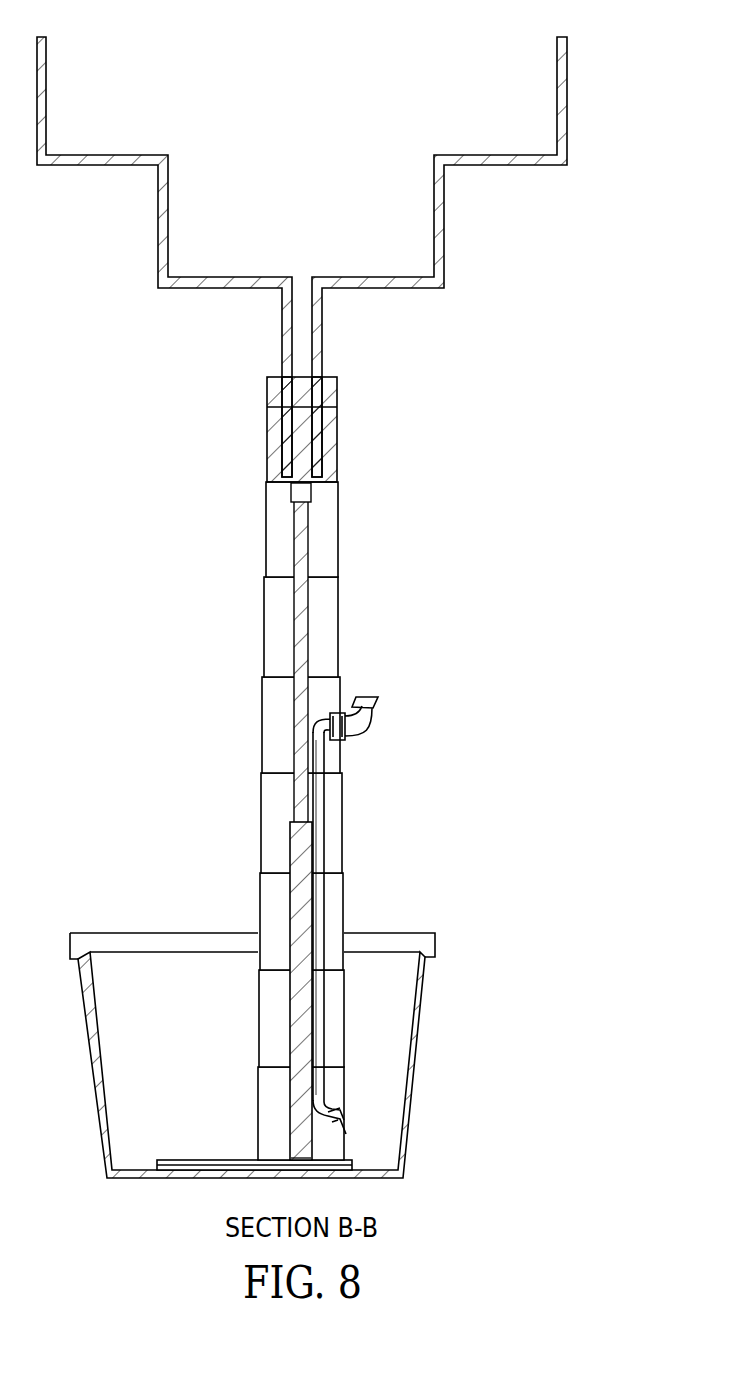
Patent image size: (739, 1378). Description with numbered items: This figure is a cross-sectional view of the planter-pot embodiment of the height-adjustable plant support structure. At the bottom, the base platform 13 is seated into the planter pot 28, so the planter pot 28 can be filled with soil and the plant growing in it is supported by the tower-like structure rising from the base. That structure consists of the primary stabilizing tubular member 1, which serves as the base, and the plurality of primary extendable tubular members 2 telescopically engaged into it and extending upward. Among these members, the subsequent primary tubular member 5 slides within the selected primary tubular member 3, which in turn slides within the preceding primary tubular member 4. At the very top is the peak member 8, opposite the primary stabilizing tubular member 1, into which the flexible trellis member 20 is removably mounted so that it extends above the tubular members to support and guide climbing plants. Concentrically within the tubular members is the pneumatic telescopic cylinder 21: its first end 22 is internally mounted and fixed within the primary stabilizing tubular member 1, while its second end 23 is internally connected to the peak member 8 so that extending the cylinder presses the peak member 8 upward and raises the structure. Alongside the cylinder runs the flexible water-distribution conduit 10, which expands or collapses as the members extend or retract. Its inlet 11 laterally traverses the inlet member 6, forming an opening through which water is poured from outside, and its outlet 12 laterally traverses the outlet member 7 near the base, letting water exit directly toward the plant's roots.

The primary stabilizing tubular member 1 is at (266, 1074).
The plurality of primary extendable tubular members 2 is at (257, 768).
The selected primary tubular member 3 is at (274, 694).
The preceding primary tubular member 4 is at (276, 600).
The subsequent primary tubular member 5 is at (278, 502).
The inlet member 6 is at (272, 750).
The outlet member 7 is at (266, 1105).
The peak member 8 is at (337, 395).
The flexible water-distribution conduit 10 is at (375, 912).
The inlet 11 is at (377, 700).
The outlet 12 is at (342, 1113).
The base platform 13 is at (157, 1164).
The flexible trellis member 20 is at (567, 41).
The pneumatic telescopic cylinder 21 is at (286, 926).
The first end 22 is at (300, 1157).
The second end 23 is at (304, 491).
The planter pot 28 is at (428, 946).